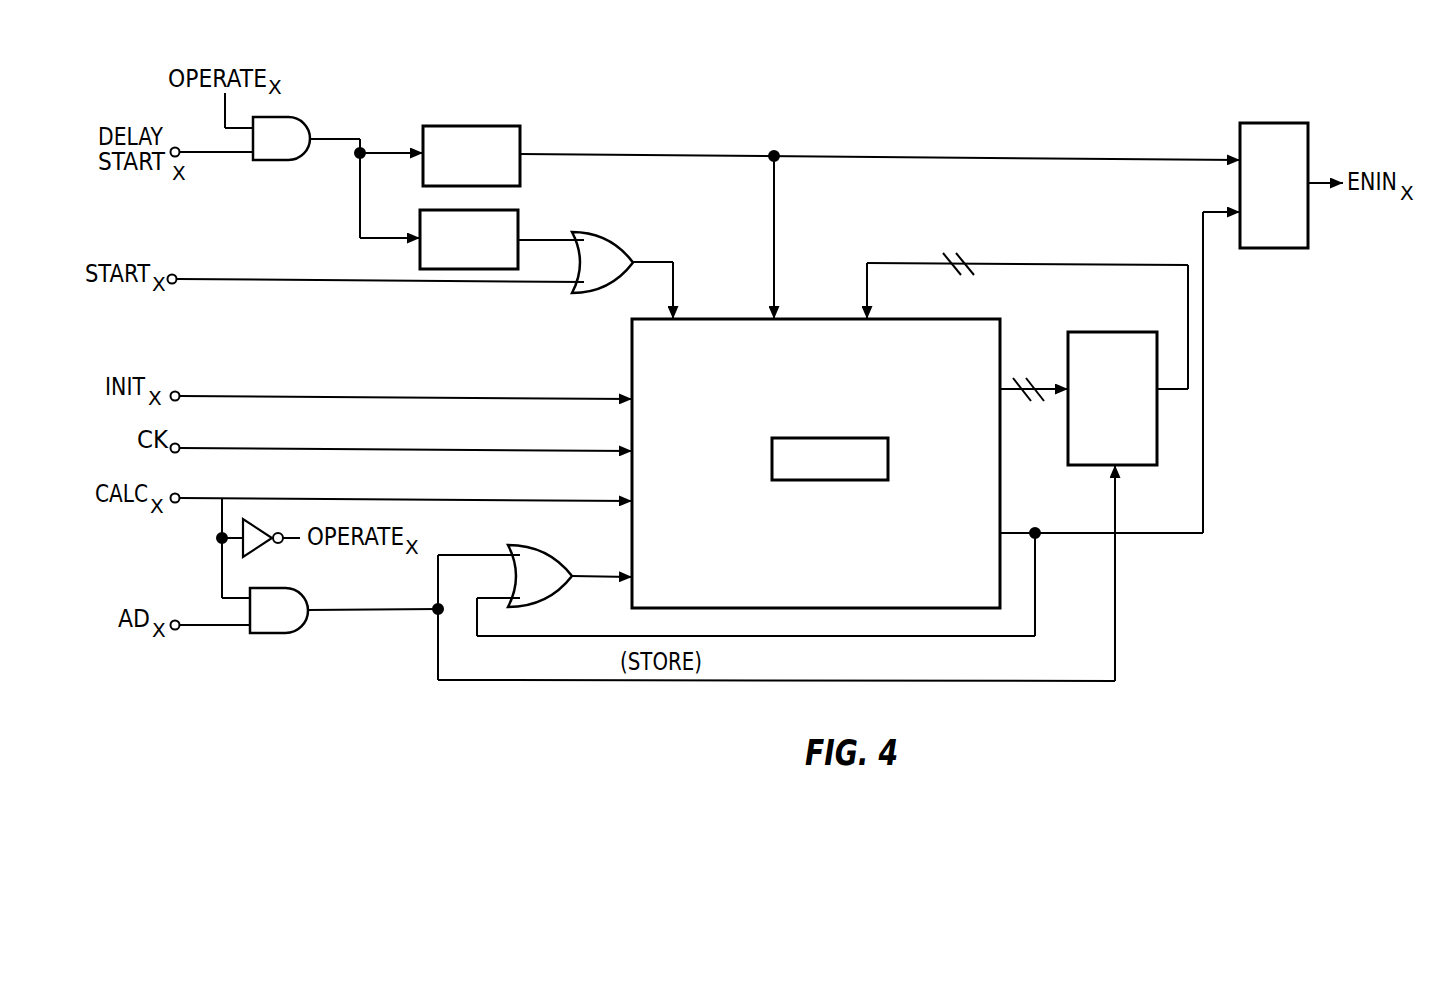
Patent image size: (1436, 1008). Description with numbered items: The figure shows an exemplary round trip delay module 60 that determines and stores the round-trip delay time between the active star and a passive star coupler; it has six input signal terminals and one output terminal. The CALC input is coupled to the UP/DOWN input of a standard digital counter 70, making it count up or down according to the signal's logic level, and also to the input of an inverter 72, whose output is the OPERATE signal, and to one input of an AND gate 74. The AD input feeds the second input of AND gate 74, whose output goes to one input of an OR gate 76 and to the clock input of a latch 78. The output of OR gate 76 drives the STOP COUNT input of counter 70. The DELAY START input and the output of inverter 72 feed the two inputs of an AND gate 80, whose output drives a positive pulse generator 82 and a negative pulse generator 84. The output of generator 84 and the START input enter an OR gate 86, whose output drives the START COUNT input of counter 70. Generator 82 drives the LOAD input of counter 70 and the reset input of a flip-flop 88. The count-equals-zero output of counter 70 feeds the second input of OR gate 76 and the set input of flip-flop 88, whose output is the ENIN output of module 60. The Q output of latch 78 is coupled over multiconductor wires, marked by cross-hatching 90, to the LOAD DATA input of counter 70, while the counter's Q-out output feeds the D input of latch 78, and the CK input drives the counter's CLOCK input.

The round trip delay module 60 is at (1050, 700).
The digital counter 70 is at (632, 360).
The inverter 72 is at (250, 556).
The AND gate 74 is at (280, 634).
The OR gate 76 is at (540, 545).
The latch 78 is at (1137, 332).
The AND gate 80 is at (280, 162).
The positive pulse generator 82 is at (478, 126).
The negative pulse generator 84 is at (518, 214).
The OR gate 86 is at (606, 234).
The flip-flop 88 is at (1240, 135).
The cross-hatching 90 is at (964, 260).